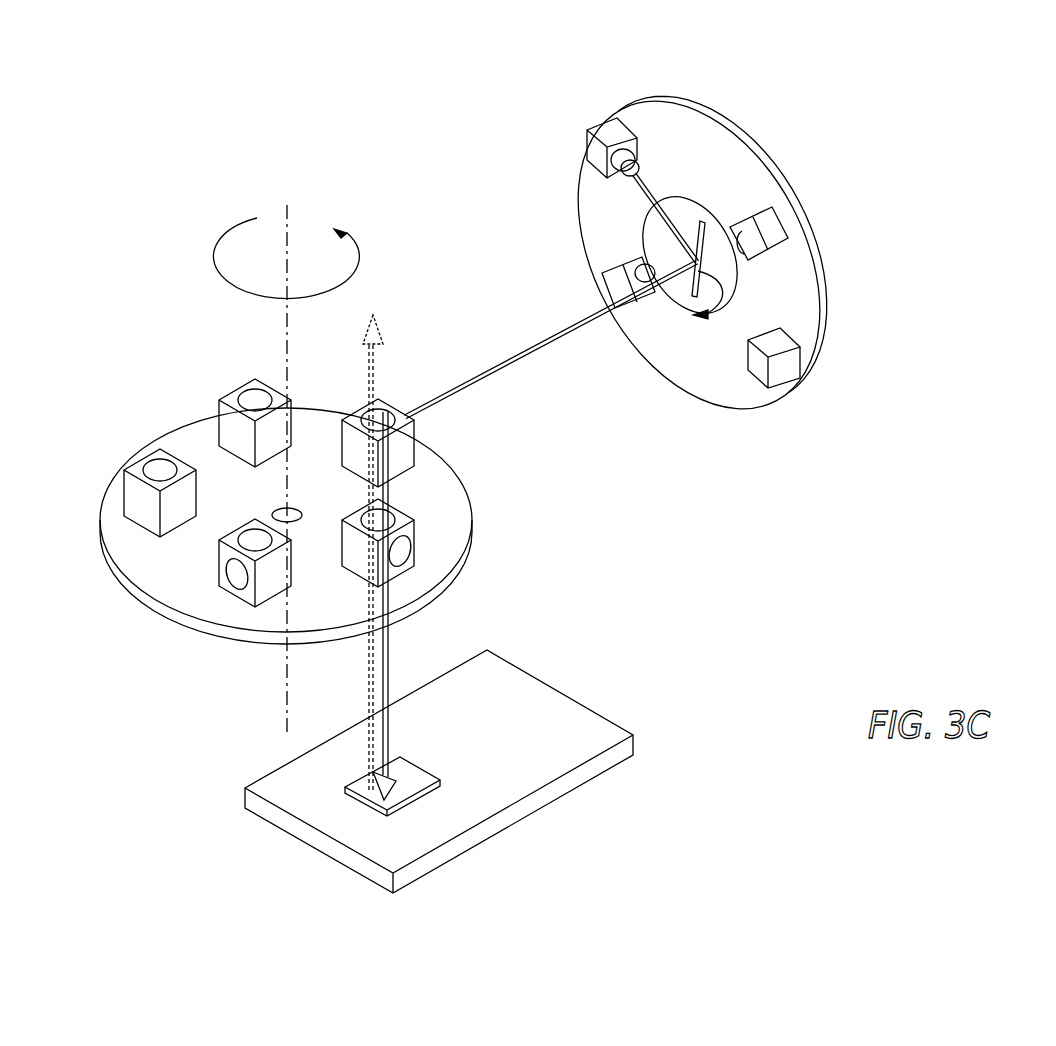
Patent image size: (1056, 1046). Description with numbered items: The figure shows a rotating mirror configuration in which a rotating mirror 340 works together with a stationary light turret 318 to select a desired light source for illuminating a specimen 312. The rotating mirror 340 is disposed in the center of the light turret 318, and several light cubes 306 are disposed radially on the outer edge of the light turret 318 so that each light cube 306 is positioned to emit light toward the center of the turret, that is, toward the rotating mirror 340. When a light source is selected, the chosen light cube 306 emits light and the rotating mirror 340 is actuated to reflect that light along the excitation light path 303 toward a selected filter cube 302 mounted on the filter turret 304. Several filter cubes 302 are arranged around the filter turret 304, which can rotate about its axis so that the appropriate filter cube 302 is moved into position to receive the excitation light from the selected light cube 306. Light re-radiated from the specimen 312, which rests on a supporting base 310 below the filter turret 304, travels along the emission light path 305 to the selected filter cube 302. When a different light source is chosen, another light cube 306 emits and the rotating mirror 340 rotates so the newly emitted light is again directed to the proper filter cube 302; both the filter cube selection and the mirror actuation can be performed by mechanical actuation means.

The filter cube 302 is at (143, 463).
The excitation light path 303 is at (523, 352).
The filter turret 304 is at (142, 589).
The emission light path 305 is at (371, 389).
The light cube 306 is at (600, 131).
The base plate 310 is at (465, 843).
The specimen 312 is at (407, 773).
The light turret 318 is at (820, 318).
The rotating mirror 340 is at (735, 292).